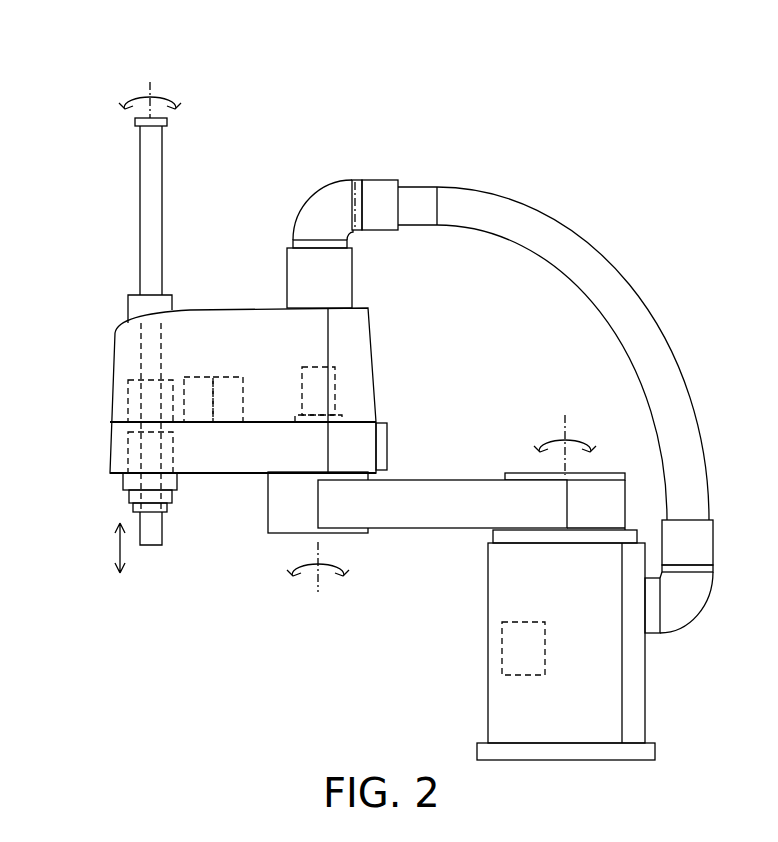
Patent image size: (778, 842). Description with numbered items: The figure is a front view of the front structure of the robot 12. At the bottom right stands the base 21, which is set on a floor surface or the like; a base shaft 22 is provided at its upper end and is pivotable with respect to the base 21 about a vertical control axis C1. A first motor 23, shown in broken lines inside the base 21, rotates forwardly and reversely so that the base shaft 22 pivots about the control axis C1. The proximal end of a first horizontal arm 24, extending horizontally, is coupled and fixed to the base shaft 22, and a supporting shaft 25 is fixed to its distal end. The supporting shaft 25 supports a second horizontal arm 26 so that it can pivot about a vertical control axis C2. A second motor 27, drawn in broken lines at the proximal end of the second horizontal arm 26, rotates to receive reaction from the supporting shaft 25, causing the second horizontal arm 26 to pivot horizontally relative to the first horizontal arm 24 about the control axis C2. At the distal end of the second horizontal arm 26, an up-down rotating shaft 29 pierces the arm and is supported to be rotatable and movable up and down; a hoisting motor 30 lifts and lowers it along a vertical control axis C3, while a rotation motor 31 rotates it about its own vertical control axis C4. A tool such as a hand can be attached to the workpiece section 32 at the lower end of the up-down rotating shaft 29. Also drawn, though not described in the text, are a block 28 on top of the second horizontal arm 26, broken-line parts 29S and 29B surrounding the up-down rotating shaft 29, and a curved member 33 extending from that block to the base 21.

The robot 12 is at (648, 88).
The base 21 is at (645, 690).
The base shaft 22 is at (615, 473).
The first motor 23 is at (502, 640).
The first horizontal arm 24 is at (443, 530).
The supporting shaft 25 is at (280, 535).
The second horizontal arm 26 is at (238, 484).
The second motor 27 is at (337, 378).
The duct attachment 28 is at (368, 322).
The up-down rotating shaft 29 is at (140, 205).
The spline nut 29S is at (128, 398).
The ball screw nut 29B is at (128, 448).
The hoisting motor 30 is at (247, 376).
The rotation motor 31 is at (201, 376).
The workpiece section 32 is at (163, 530).
The duct 33 is at (662, 332).
The control axis C1 is at (565, 430).
The control axis C2 is at (318, 583).
The control axis C3 is at (145, 80).
The control axis C4 is at (177, 84).